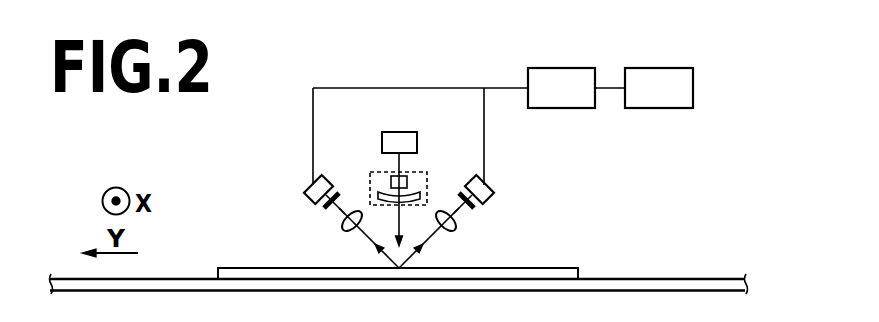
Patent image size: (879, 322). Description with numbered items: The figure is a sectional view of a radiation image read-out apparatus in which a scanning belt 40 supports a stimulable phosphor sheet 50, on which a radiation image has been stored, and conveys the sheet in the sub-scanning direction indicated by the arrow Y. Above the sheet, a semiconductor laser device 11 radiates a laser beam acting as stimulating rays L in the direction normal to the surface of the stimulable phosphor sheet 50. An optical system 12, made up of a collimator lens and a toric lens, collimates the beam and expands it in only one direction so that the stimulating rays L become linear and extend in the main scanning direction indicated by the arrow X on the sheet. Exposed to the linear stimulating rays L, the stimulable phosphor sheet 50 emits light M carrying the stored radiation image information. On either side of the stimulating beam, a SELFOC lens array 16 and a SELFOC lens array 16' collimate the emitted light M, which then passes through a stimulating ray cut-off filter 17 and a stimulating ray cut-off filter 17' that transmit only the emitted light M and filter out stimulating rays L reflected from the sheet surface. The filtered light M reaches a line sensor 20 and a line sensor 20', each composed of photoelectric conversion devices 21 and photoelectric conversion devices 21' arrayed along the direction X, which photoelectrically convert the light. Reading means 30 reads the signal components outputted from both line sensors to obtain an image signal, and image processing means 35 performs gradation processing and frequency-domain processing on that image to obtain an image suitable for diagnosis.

The semiconductor laser device 11 is at (410, 131).
The optical system 12 is at (415, 171).
The SELFOC lens array 16 is at (476, 238).
The SELFOC lens array 16' is at (318, 238).
The stimulating ray cut-off filter 17 is at (486, 226).
The stimulating ray cut-off filter 17' is at (309, 226).
The line sensor 20 is at (498, 182).
The line sensor 20' is at (295, 182).
The photoelectric conversion devices 21 is at (499, 201).
The photoelectric conversion devices 21' is at (295, 201).
The reading means 30 is at (578, 68).
The image processing means 35 is at (675, 68).
The scanning belt 40 is at (645, 279).
The stimulable phosphor sheet 50 is at (232, 268).
The stimulating rays L is at (400, 230).
The emitted light M is at (378, 250).